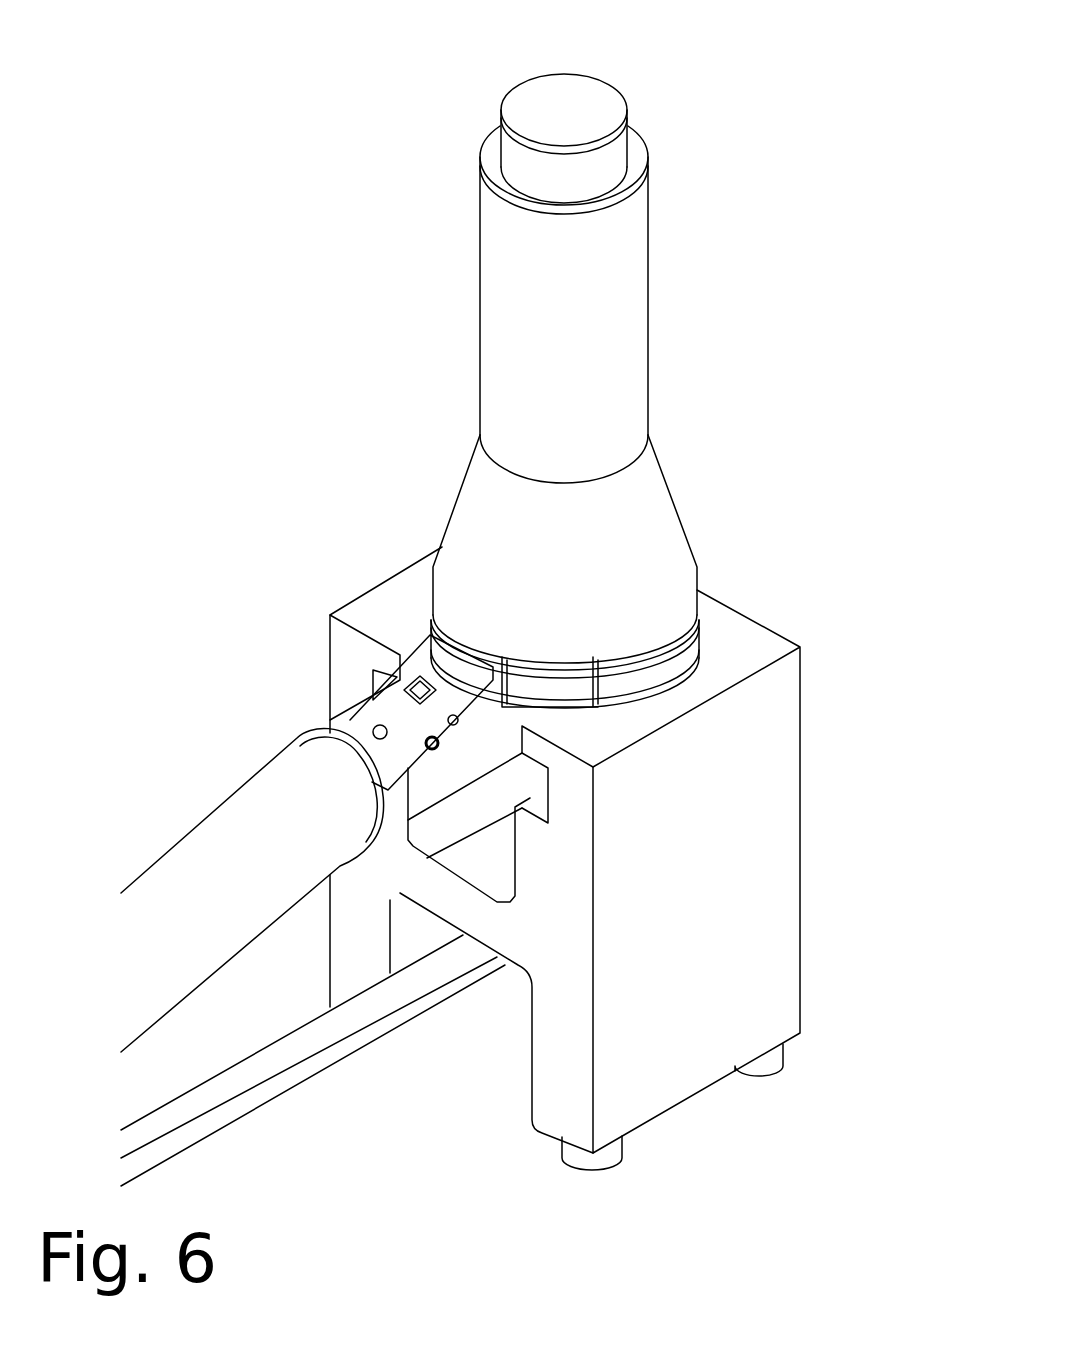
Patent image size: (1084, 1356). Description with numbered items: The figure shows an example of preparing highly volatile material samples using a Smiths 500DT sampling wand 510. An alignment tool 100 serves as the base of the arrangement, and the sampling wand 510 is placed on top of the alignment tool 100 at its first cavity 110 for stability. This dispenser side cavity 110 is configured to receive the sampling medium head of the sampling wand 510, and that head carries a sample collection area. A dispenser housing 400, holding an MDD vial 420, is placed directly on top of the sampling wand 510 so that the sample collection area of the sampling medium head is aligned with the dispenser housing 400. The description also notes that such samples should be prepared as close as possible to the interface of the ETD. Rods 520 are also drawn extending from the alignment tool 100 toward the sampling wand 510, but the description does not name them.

The alignment tool 100 is at (640, 1073).
The first cavity 110 is at (690, 673).
The dispenser housing 400 is at (492, 360).
The MDD vial 420 is at (520, 108).
The sampling wand 510 is at (608, 679).
The guide rods 520 is at (497, 963).